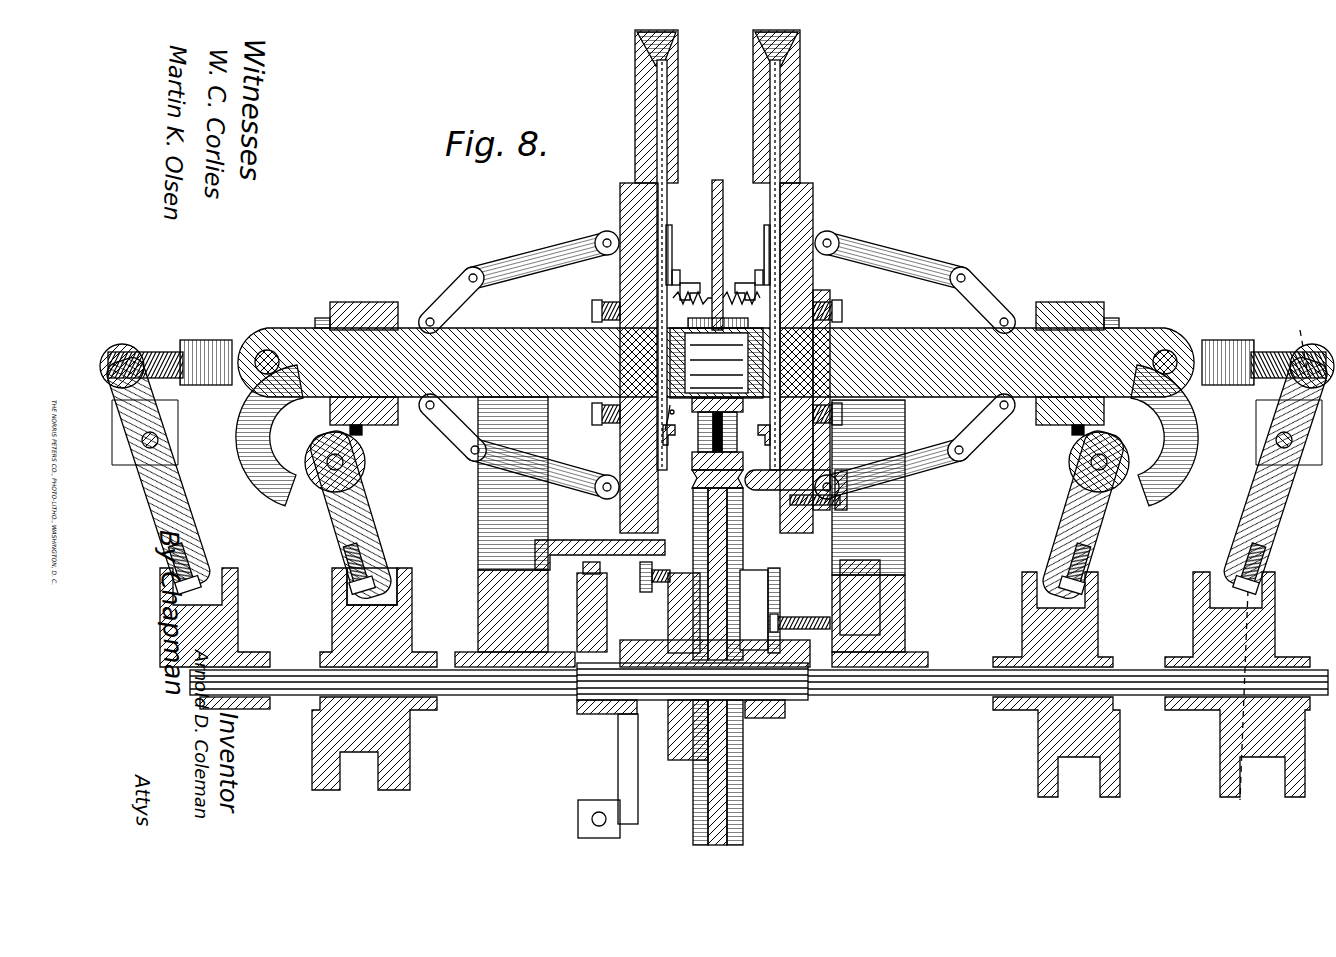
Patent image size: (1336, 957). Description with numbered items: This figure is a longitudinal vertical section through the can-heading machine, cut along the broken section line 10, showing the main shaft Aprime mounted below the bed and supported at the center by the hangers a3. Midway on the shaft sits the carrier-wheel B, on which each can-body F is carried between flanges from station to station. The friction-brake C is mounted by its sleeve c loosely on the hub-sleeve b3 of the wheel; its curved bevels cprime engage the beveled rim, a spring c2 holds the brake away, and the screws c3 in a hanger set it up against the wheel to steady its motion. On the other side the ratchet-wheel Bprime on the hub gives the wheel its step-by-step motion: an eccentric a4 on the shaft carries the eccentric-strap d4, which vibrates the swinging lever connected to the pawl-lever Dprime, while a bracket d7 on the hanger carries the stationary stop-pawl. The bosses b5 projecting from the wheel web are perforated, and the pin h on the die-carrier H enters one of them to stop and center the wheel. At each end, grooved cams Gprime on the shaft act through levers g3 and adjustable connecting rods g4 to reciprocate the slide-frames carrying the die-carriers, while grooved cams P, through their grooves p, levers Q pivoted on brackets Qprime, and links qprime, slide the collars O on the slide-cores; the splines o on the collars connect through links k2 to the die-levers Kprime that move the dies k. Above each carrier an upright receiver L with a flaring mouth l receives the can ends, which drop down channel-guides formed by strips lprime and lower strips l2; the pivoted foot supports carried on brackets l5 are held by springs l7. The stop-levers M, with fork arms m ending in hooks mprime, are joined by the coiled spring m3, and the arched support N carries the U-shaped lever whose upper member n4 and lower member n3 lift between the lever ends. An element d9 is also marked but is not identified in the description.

The main shaft Aprime is at (305, 697).
The grooved cam Gprime is at (238, 620).
The grooved cam P is at (412, 622).
The cam groove p is at (400, 585).
The section line 10 is at (1272, 568).
The connecting rod g4 is at (233, 352).
The lever g3 is at (195, 518).
The link qprime is at (258, 455).
The lever Q is at (385, 530).
The bracket Qprime is at (368, 445).
The collar O is at (352, 302).
The die-lever Kprime is at (525, 262).
The link k2 is at (452, 292).
The spline o is at (492, 398).
The die k is at (716, 362).
The upright receiver L is at (635, 108).
The flaring mouth l is at (668, 58).
The guide-strip lprime is at (668, 140).
The die-carrier H is at (620, 207).
The arched support N is at (723, 184).
The hook projection mprime is at (668, 228).
The fork arm m is at (717, 256).
The stop-lever M is at (708, 251).
The coiled spring m3 is at (703, 292).
The upper lever member n4 is at (740, 290).
The lower lever member n3 is at (728, 306).
The can-body F is at (716, 363).
The lower guide-strip l2 is at (682, 361).
The spring l7 is at (677, 415).
The right-angled bracket l5 is at (716, 437).
The boss b5 is at (700, 458).
The carrier-wheel B is at (745, 775).
The pin h is at (772, 490).
The curved bevel cprime is at (750, 572).
The friction-brake C is at (770, 585).
The brake screw c3 is at (792, 617).
The hanger a3 is at (478, 515).
The bracket d7 is at (565, 545).
The eccentric a4 is at (578, 616).
The eccentric-strap d4 is at (672, 575).
The ratchet-wheel Bprime is at (668, 615).
The clamp d9 is at (607, 723).
The pawl-lever Dprime is at (626, 762).
The spring c2 is at (735, 715).
The hub-sleeve b3 is at (786, 718).
The sleeve c is at (798, 720).